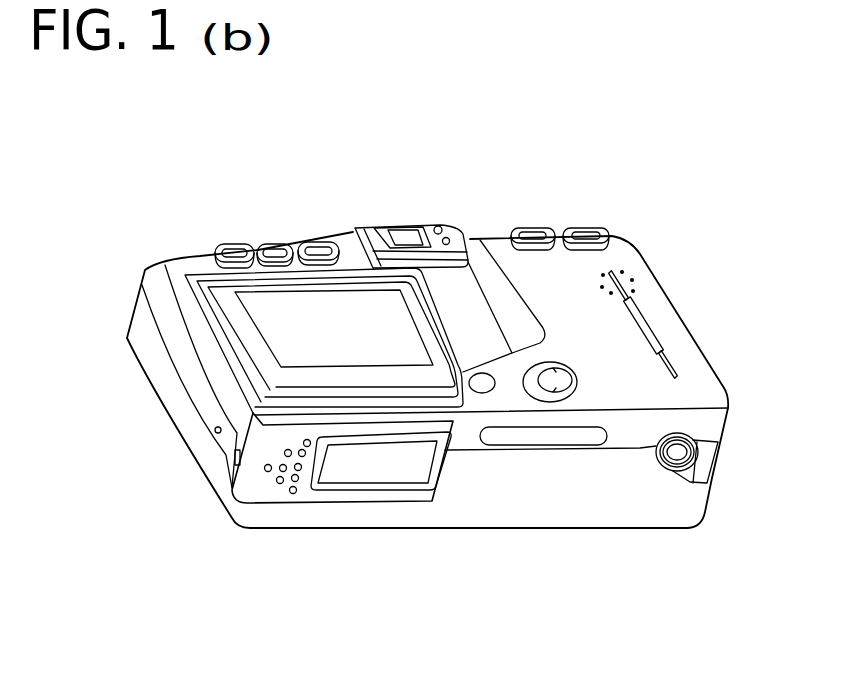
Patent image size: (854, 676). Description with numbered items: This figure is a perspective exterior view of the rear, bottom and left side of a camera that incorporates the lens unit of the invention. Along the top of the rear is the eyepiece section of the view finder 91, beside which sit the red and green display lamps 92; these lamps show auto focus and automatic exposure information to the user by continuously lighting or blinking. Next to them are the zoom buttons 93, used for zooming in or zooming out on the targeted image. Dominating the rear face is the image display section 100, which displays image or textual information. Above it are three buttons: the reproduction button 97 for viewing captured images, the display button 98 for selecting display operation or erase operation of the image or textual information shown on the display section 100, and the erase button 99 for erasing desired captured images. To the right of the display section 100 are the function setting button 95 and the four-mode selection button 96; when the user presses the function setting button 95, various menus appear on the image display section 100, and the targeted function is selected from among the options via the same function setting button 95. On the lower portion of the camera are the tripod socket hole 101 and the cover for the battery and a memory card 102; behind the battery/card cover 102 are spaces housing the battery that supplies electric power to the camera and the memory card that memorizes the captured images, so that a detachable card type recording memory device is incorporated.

The eyepiece section of the view finder 91 is at (403, 229).
The red and green display lamps 92 is at (458, 237).
The zoom buttons 93 is at (580, 229).
The function setting button 95 is at (483, 389).
The four-mode selection button 96 is at (578, 386).
The reproduction button 97 is at (231, 246).
The display button 98 is at (277, 248).
The erase button 99 is at (312, 245).
The image display section 100 is at (260, 317).
The tripod socket hole 101 is at (670, 478).
The cover for the battery and a memory card 102 is at (340, 477).